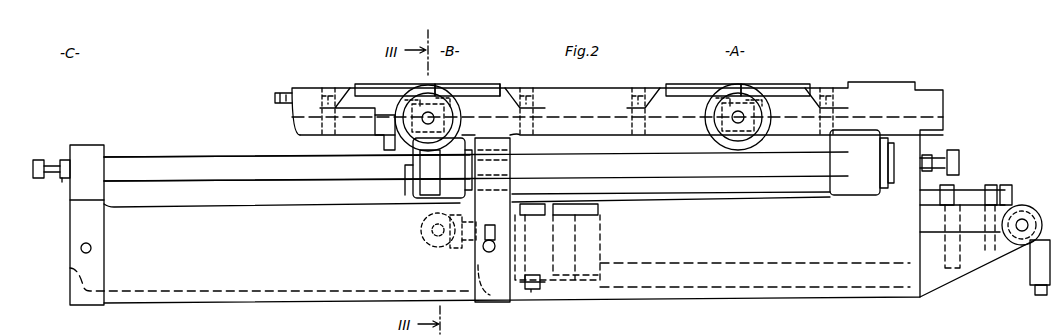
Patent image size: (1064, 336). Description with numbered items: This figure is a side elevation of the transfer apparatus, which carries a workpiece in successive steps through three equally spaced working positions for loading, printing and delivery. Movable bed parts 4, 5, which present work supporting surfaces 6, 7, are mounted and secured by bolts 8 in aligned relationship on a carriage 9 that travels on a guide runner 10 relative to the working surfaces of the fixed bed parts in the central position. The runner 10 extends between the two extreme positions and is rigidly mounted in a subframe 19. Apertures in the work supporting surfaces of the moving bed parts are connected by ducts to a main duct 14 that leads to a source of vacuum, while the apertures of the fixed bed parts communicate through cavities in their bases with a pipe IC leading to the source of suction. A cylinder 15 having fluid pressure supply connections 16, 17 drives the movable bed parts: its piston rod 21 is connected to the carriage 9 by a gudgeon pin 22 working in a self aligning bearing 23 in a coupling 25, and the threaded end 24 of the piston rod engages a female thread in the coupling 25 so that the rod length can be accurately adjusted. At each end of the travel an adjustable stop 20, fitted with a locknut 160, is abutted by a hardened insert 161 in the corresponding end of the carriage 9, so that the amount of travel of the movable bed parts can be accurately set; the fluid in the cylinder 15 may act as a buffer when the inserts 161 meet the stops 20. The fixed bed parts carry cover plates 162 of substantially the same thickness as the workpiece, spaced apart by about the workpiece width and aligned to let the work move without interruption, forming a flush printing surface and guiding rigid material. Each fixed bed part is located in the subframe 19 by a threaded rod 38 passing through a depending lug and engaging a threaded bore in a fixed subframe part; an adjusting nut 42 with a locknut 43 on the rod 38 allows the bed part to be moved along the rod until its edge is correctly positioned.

The movable bed part 4 is at (388, 90).
The movable bed part 5 is at (696, 90).
The work supporting surface 6 is at (480, 89).
The work supporting surface 7 is at (792, 90).
The bolt 8 is at (329, 89).
The carriage 9 is at (422, 190).
The runner 10 is at (180, 162).
The main duct 14 is at (280, 92).
The cylinder 15 is at (667, 255).
The fluid pressure supply connection 16 is at (530, 290).
The fluid pressure supply connection 17 is at (1033, 290).
The subframe 19 is at (98, 240).
The adjustable stop 20 is at (52, 163).
The piston rod 21 is at (488, 224).
The gudgeon pin 22 is at (425, 233).
The self aligning bearing 23 is at (445, 250).
The end of the piston rod 24 is at (466, 244).
The coupling 25 is at (478, 200).
The threaded rod 38 is at (429, 111).
The adjusting nut 42 is at (446, 96).
The locknut 43 is at (418, 102).
The locknut 160 is at (63, 181).
The hardened insert 161 is at (410, 187).
The cover plate 162 is at (503, 90).
The pipe IC is at (383, 130).